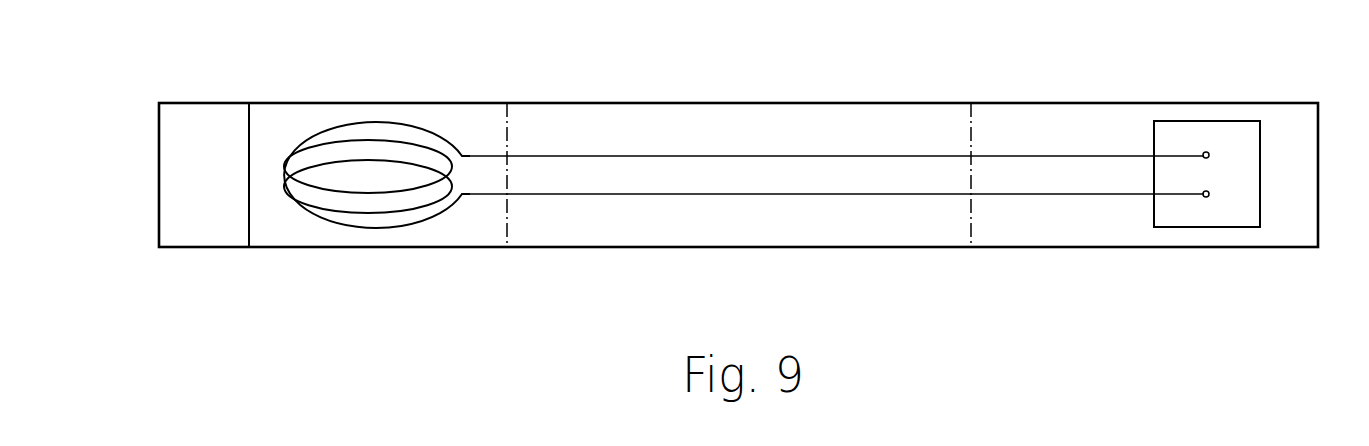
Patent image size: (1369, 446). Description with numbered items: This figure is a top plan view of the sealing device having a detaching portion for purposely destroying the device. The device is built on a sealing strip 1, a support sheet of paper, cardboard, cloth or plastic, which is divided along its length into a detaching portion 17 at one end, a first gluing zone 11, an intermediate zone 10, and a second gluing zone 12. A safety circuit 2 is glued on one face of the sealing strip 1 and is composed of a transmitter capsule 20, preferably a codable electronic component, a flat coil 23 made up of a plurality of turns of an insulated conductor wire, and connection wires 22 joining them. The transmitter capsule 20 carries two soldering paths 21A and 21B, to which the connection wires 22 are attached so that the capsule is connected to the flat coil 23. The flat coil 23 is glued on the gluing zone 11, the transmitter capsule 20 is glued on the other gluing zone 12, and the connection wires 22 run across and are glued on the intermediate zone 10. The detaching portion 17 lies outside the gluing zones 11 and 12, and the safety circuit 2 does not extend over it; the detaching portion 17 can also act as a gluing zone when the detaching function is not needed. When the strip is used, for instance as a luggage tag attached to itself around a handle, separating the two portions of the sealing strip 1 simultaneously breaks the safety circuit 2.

The sealing strip 1 is at (866, 96).
The safety circuit 2 is at (1266, 180).
The intermediate zone 10 is at (733, 127).
The gluing zone 11 is at (377, 173).
The gluing zone 12 is at (1103, 127).
The detaching portion 17 is at (188, 145).
The transmitter capsule 20 is at (1243, 143).
The soldering path 21A is at (1205, 198).
The soldering path 21B is at (1208, 151).
The connection wires 22 is at (862, 194).
The flat coil 23 is at (378, 230).